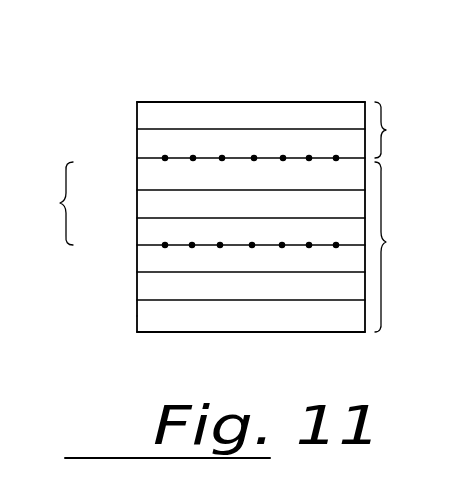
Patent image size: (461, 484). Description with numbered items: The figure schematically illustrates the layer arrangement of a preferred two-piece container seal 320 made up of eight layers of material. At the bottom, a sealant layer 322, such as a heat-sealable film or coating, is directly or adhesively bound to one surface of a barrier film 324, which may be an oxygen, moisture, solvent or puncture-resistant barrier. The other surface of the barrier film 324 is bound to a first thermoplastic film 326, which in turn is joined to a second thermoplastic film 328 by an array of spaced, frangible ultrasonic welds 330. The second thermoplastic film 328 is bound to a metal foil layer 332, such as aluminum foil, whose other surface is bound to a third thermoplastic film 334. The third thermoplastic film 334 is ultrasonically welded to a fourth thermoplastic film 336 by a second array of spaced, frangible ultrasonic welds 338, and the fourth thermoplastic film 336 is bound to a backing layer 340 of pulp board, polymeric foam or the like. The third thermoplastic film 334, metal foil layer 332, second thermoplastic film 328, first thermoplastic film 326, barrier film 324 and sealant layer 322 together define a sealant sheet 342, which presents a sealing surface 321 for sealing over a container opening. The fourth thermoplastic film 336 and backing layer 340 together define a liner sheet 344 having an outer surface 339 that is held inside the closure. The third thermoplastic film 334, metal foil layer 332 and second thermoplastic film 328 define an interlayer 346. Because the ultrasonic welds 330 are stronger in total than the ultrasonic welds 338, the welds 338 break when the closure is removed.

The two-piece container seal 320 is at (172, 352).
The sealing surface 321 is at (338, 350).
The sealant layer 322 is at (145, 318).
The barrier film 324 is at (137, 288).
The first thermoplastic film 326 is at (137, 260).
The second thermoplastic film 328 is at (137, 232).
The ultrasonic welds 330 is at (252, 247).
The metal foil layer 332 is at (137, 204).
The third thermoplastic film 334 is at (137, 176).
The fourth thermoplastic film 336 is at (137, 146).
The ultrasonic welds 338 is at (283, 156).
The outer surface 339 is at (211, 92).
The backing layer 340 is at (137, 117).
The sealant sheet 342 is at (404, 247).
The liner sheet 344 is at (406, 130).
The interlayer 346 is at (41, 203).